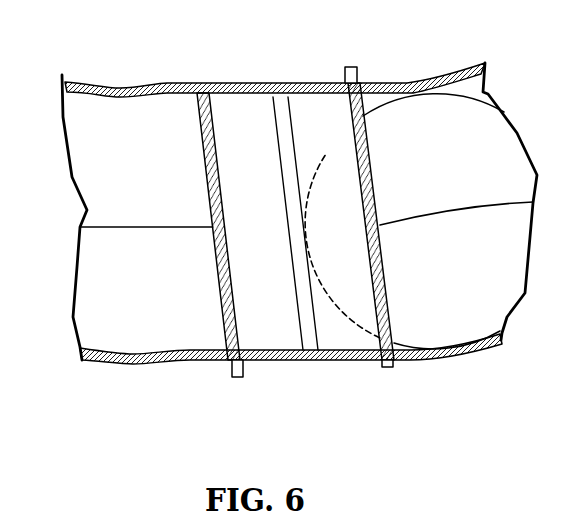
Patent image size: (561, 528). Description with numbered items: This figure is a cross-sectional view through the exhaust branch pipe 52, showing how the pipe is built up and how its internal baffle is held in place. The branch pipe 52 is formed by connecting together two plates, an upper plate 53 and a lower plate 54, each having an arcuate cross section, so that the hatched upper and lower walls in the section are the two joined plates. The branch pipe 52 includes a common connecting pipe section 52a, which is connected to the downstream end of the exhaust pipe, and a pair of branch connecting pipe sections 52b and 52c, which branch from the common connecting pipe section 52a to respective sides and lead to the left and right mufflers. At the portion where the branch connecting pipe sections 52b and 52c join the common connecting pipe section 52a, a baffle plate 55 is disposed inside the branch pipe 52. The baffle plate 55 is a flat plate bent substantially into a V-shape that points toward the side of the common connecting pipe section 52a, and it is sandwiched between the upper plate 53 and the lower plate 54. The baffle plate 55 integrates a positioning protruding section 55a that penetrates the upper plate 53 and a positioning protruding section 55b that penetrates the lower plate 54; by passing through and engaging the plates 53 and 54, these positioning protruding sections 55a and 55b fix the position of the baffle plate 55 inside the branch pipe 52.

The branch pipe 52 is at (301, 243).
The common connecting pipe section 52a is at (325, 155).
The branch connecting pipe section 52b is at (138, 88).
The branch connecting pipe section 52c is at (434, 82).
The upper plate 53 is at (88, 88).
The lower plate 54 is at (133, 362).
The baffle plate 55 is at (439, 188).
The positioning protruding section 55a is at (349, 66).
The positioning protruding section 55b is at (237, 378).